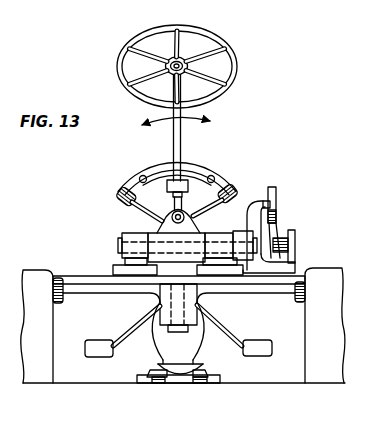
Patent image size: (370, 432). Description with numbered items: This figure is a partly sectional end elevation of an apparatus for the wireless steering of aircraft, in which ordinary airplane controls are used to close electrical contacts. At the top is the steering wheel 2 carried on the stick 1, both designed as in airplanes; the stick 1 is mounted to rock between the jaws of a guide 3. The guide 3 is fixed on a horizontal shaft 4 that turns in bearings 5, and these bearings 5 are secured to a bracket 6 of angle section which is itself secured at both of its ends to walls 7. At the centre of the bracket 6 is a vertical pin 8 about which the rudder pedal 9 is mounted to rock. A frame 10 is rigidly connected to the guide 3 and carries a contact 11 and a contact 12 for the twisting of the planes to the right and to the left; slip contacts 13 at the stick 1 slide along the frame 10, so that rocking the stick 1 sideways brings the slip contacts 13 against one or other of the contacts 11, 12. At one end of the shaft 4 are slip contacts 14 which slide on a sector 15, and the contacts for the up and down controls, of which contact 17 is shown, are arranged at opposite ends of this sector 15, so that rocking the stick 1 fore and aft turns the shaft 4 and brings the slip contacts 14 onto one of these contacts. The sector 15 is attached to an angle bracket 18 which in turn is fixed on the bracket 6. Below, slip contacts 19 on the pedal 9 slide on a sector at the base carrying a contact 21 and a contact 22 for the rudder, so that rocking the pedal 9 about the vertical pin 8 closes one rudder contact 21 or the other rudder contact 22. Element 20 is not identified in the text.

The stick 1 is at (183, 116).
The steering wheel 2 is at (234, 57).
The guide 3 is at (200, 213).
The shaft 4 is at (118, 248).
The bearings 5 is at (127, 237).
The bracket 6 is at (90, 291).
The walls 7 is at (30, 277).
The vertical pin 8 is at (181, 320).
The rudder pedal 9 is at (219, 343).
The frame 10 is at (195, 166).
The contact 11 is at (120, 193).
The contact 12 is at (231, 188).
The slip contacts 13 is at (142, 176).
The slip contacts 14 is at (271, 204).
The sector 15 is at (277, 191).
The contact 17 is at (278, 216).
The angle bracket 18 is at (286, 270).
The slip contacts 19 is at (148, 374).
The base plate 20 is at (182, 386).
The contact 21 is at (157, 385).
The contact 22 is at (200, 385).